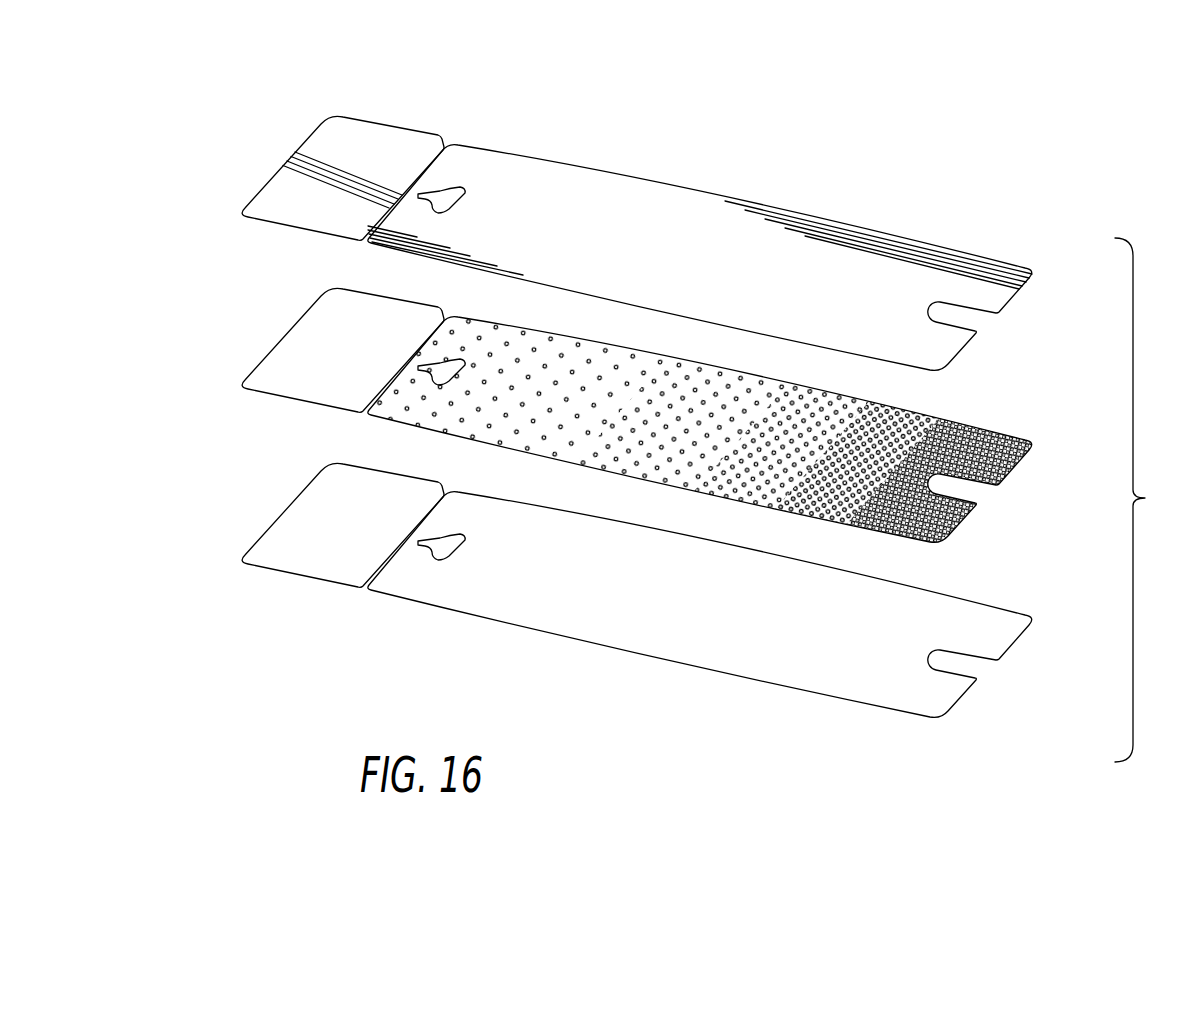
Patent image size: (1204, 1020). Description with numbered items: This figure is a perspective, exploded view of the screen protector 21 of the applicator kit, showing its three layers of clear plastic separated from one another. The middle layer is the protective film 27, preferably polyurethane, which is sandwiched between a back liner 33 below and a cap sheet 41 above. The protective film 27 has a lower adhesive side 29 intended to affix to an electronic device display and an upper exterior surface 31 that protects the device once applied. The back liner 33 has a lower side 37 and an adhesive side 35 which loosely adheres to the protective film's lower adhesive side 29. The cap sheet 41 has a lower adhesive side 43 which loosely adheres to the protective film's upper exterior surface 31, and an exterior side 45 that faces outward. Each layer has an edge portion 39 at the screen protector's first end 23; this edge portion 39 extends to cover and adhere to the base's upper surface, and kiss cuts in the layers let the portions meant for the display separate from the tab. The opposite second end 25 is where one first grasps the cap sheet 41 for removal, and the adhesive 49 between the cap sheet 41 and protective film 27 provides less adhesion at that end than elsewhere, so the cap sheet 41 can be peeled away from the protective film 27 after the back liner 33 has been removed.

The screen protector 21 is at (1148, 500).
The first end 23 is at (313, 133).
The second end 25 is at (1020, 295).
The protective film 27 is at (526, 403).
The lower adhesive side 29 is at (930, 542).
The upper exterior surface 31 is at (637, 380).
The back liner 33 is at (671, 608).
The adhesive side 35 is at (1008, 625).
The lower side 37 is at (888, 713).
The edge portion 39 is at (410, 138).
The cap sheet 41 is at (684, 275).
The lower adhesive side 43 is at (929, 368).
The exterior side 45 is at (810, 256).
The adhesive 49 is at (730, 403).